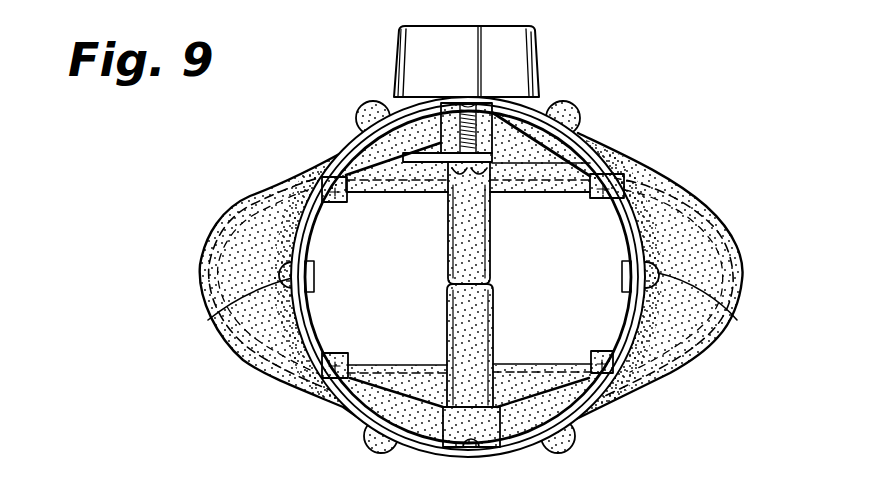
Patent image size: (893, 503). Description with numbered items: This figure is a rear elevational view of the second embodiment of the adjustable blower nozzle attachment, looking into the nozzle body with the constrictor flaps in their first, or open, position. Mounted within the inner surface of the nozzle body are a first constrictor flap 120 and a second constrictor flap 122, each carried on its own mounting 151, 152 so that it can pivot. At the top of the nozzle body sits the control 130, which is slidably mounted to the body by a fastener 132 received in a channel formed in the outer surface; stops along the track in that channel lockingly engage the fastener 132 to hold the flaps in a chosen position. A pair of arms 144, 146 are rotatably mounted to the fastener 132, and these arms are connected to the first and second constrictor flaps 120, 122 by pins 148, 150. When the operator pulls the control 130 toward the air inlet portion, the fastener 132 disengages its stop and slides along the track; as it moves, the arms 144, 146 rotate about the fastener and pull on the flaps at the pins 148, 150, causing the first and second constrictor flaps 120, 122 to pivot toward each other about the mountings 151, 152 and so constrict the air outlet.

The control 130 is at (481, 26).
The fastener 132 is at (489, 116).
The arm 144 is at (428, 156).
The arm 146 is at (528, 156).
The pin 148 is at (407, 166).
The pin 150 is at (548, 166).
The mounting 151 is at (208, 320).
The mounting 152 is at (735, 316).
The first constrictor flap 120 is at (417, 416).
The second constrictor flap 122 is at (521, 414).